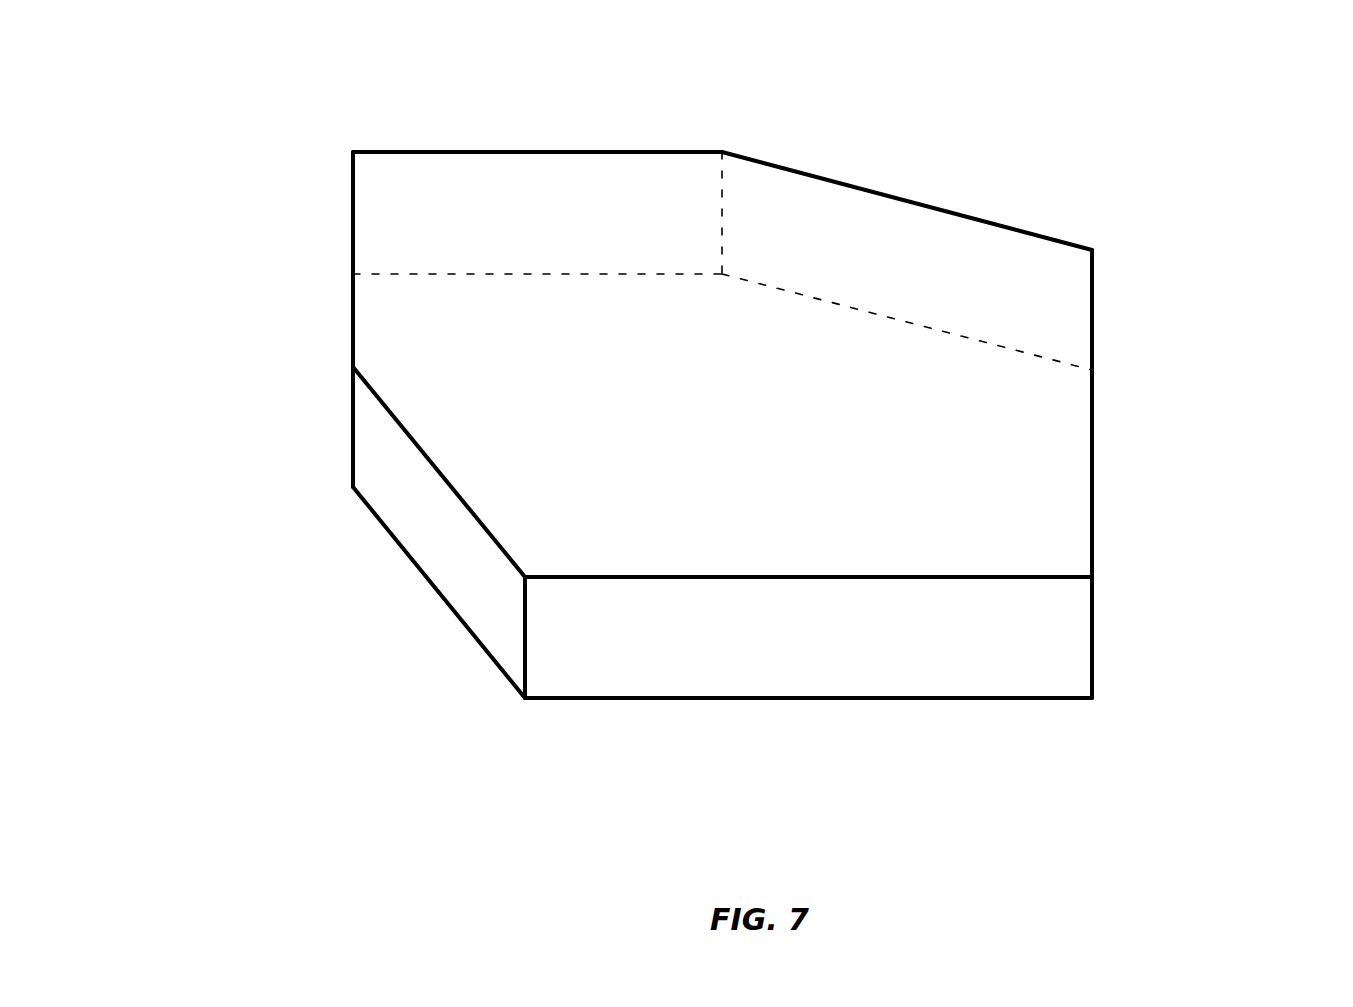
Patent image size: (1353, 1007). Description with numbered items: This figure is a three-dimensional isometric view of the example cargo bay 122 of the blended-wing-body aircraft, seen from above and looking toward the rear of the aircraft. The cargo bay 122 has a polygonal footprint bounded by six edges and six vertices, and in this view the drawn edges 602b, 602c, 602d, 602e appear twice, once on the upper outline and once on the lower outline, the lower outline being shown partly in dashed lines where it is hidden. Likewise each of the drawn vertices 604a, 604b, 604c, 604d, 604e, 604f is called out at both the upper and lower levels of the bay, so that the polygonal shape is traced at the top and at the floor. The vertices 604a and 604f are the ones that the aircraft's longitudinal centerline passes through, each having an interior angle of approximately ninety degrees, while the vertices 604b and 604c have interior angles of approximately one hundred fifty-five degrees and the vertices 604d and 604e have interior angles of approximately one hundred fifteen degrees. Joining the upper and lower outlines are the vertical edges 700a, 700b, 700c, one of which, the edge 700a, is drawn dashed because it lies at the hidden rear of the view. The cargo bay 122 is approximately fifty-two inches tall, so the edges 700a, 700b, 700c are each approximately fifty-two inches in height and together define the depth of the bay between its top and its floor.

The cargo bay 122 is at (718, 399).
The edge 602b is at (568, 152).
The edge 602c is at (440, 473).
The edge 602d is at (990, 218).
The edge 602e is at (864, 577).
The vertex 604a is at (353, 152).
The vertex 604b is at (353, 367).
The vertex 604c is at (724, 151).
The vertex 604d is at (525, 577).
The vertex 604e is at (1092, 250).
The vertex 604f is at (1092, 577).
The edge 700a is at (722, 218).
The edge 700b is at (528, 632).
The edge 700c is at (1092, 642).